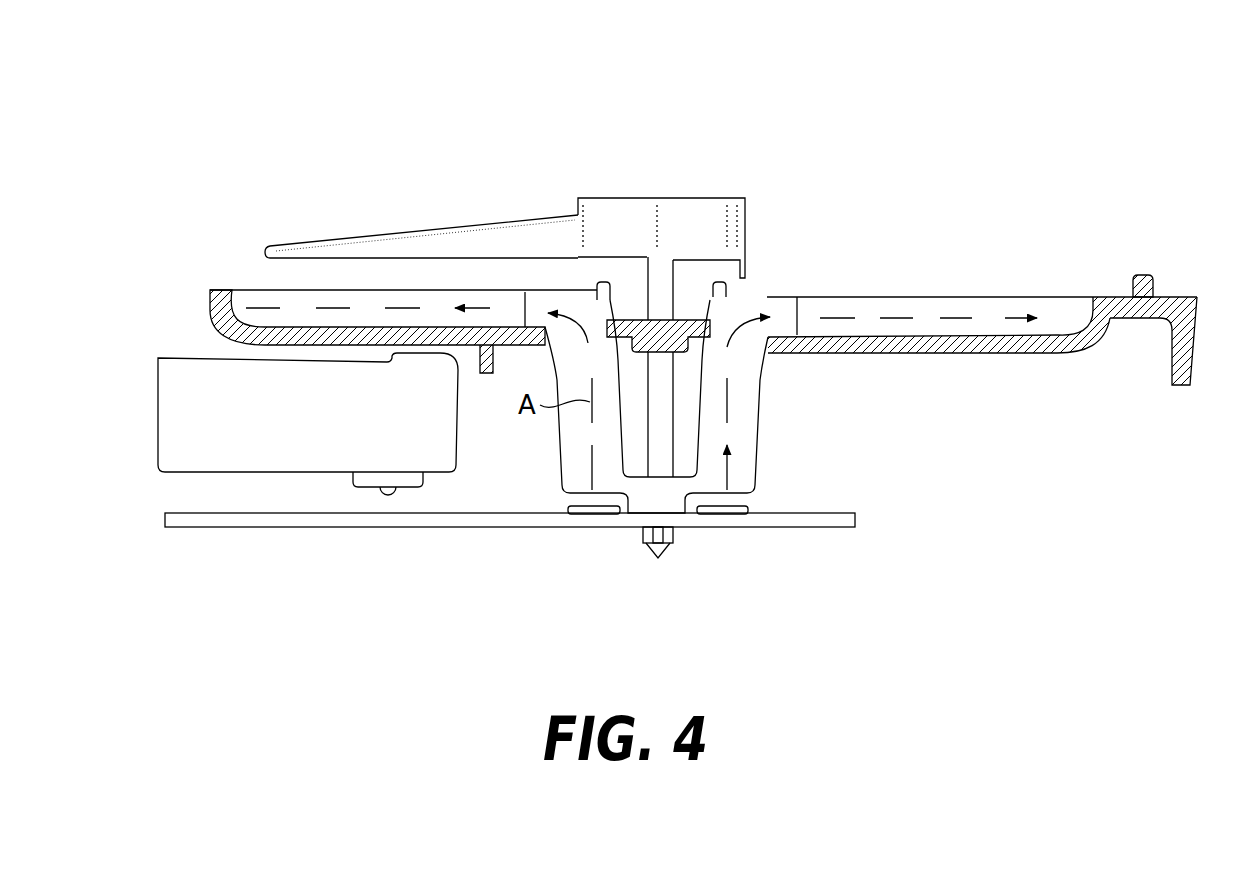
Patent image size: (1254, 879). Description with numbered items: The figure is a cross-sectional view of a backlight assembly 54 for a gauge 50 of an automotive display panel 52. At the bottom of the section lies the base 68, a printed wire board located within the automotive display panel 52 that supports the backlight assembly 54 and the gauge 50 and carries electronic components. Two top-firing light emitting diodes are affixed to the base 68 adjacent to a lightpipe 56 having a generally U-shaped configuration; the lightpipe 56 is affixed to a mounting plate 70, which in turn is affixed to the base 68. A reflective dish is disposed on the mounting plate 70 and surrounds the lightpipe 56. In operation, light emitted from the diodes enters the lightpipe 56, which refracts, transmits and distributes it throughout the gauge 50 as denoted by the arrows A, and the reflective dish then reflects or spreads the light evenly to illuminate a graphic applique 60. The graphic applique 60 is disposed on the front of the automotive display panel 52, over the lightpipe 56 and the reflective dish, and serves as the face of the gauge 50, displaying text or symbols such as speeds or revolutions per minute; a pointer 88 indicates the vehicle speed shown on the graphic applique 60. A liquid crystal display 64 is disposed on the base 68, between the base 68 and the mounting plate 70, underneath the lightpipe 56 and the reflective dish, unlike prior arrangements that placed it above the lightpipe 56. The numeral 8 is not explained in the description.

The left air channel 8 is at (262, 292).
The gauge 50 is at (1160, 184).
The automotive display panel 52 is at (205, 130).
The backlight assembly 54 is at (275, 92).
The lightpipe 56 is at (760, 402).
The graphic applique 60 is at (985, 297).
The liquid crystal display 64 is at (178, 404).
The base 68 is at (855, 520).
The mounting plate 70 is at (1195, 350).
The pointer 88 is at (467, 227).